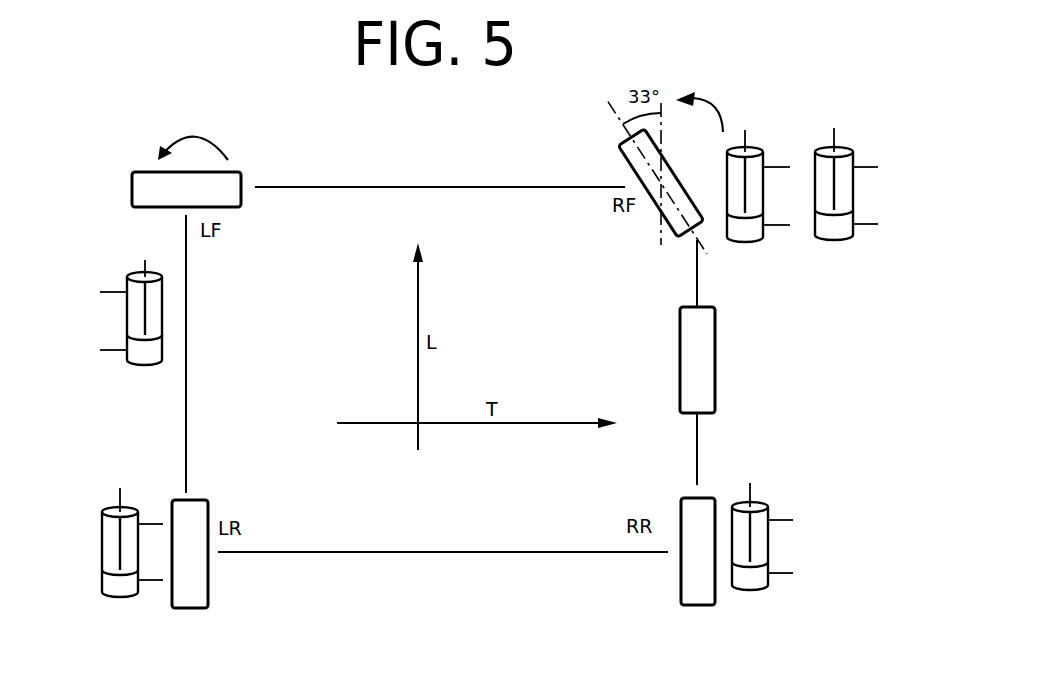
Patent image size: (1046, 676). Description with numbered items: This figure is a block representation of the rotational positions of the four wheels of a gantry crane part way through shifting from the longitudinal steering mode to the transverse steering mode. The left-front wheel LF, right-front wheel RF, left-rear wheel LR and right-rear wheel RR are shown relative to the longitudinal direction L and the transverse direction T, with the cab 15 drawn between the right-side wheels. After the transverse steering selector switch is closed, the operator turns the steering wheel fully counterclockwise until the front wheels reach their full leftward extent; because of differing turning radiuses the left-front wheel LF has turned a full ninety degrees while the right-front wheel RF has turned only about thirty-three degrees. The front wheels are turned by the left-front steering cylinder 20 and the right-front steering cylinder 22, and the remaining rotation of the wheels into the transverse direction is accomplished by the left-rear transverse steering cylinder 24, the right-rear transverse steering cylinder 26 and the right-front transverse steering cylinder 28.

The cab 15 is at (715, 345).
The left-front steering cylinder 20 is at (162, 323).
The right-front steering cylinder 22 is at (726, 204).
The right-front transverse steering cylinder 28 is at (816, 198).
The left-rear transverse steering cylinder 24 is at (101, 574).
The right-rear transverse steering cylinder 26 is at (768, 542).